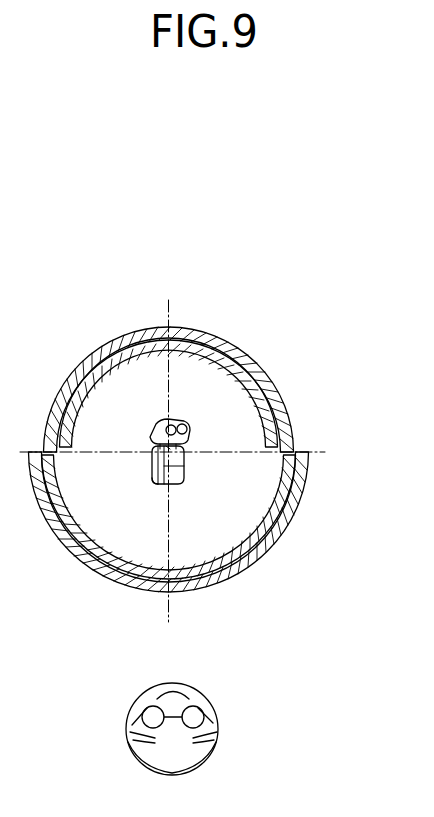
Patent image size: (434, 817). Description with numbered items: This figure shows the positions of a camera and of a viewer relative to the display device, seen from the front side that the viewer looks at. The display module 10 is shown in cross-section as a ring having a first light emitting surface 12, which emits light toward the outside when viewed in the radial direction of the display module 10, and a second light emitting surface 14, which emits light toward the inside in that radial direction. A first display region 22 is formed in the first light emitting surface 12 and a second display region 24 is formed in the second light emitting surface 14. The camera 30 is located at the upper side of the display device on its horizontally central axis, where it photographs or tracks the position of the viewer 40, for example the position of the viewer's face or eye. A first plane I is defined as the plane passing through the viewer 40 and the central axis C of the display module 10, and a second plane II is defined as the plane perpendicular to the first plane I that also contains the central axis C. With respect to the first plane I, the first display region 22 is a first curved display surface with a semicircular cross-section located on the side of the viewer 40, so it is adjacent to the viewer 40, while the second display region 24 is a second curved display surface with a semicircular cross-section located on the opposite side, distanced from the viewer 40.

The display module 10 is at (209, 444).
The first light emitting surface 12 is at (281, 390).
The second light emitting surface 14 is at (253, 518).
The first display region 22 is at (265, 552).
The second display region 24 is at (252, 366).
The camera 30 is at (180, 419).
The viewer 40 is at (218, 722).
The central axis C is at (153, 468).
The first plane I is at (168, 545).
The second plane II is at (250, 453).